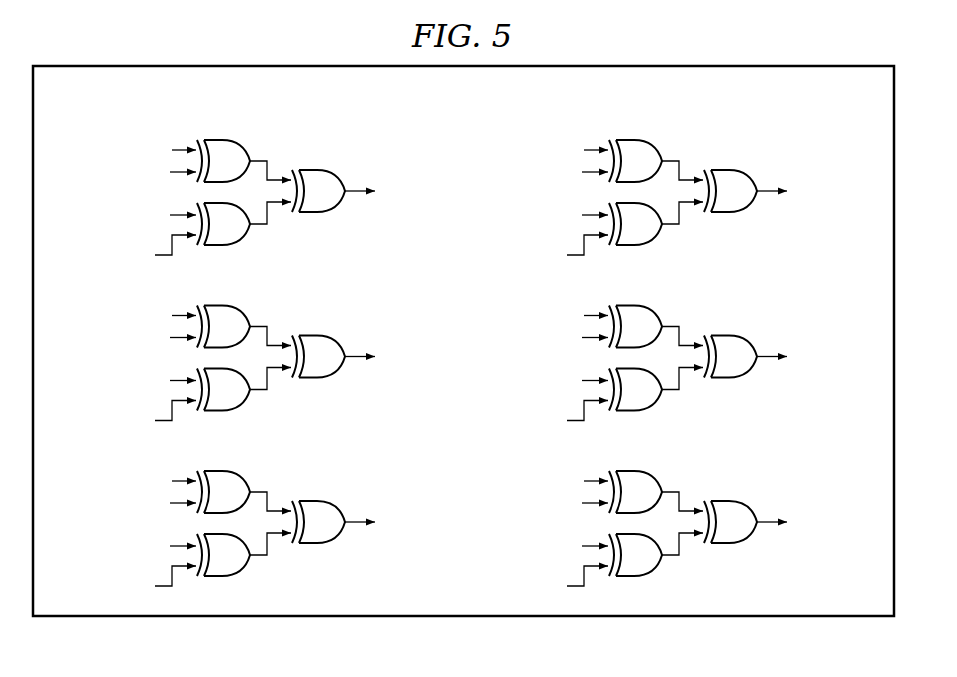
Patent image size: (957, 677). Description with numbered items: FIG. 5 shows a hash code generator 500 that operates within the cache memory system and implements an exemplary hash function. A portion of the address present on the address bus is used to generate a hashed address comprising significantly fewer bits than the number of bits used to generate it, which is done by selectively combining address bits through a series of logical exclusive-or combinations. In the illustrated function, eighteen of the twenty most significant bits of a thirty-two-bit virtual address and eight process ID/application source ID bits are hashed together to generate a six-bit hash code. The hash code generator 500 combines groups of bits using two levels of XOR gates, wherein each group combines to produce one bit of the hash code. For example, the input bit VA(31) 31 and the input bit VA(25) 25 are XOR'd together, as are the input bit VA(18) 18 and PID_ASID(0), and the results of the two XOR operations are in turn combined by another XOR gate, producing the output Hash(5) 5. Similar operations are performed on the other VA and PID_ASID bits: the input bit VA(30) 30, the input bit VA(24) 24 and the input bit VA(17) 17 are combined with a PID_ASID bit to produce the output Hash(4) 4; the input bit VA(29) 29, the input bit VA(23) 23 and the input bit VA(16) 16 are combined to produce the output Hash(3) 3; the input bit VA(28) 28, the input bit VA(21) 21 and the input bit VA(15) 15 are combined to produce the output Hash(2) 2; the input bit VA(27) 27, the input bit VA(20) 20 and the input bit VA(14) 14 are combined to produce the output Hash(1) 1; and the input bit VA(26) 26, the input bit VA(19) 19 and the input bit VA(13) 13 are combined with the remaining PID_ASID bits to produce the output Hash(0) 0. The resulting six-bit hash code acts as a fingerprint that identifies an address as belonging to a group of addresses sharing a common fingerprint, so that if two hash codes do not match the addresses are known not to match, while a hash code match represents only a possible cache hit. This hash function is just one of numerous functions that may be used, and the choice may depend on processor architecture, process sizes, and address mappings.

The hash code generator 500 is at (656, 62).
The Hash(5) output 5 is at (376, 191).
The Hash(4) output 4 is at (376, 357).
The Hash(3) output 3 is at (376, 522).
The Hash(2) output 2 is at (788, 191).
The Hash(1) output 1 is at (788, 357).
The Hash(0) output 0 is at (788, 522).
The VA(31) input bit 31 is at (172, 150).
The VA(25) input bit 25 is at (170, 172).
The VA(18) input bit 18 is at (170, 215).
The VA(30) input bit 30 is at (144, 301).
The VA(24) input bit 24 is at (144, 337).
The VA(17) input bit 17 is at (144, 380).
The VA(29) input bit 29 is at (144, 467).
The VA(23) input bit 23 is at (144, 503).
The VA(16) input bit 16 is at (144, 546).
The VA(28) input bit 28 is at (556, 136).
The VA(21) input bit 21 is at (556, 172).
The VA(15) input bit 15 is at (556, 215).
The VA(27) input bit 27 is at (556, 301).
The VA(20) input bit 20 is at (556, 337).
The VA(14) input bit 14 is at (556, 380).
The VA(26) input bit 26 is at (556, 467).
The VA(19) input bit 19 is at (556, 503).
The VA(13) input bit 13 is at (556, 546).